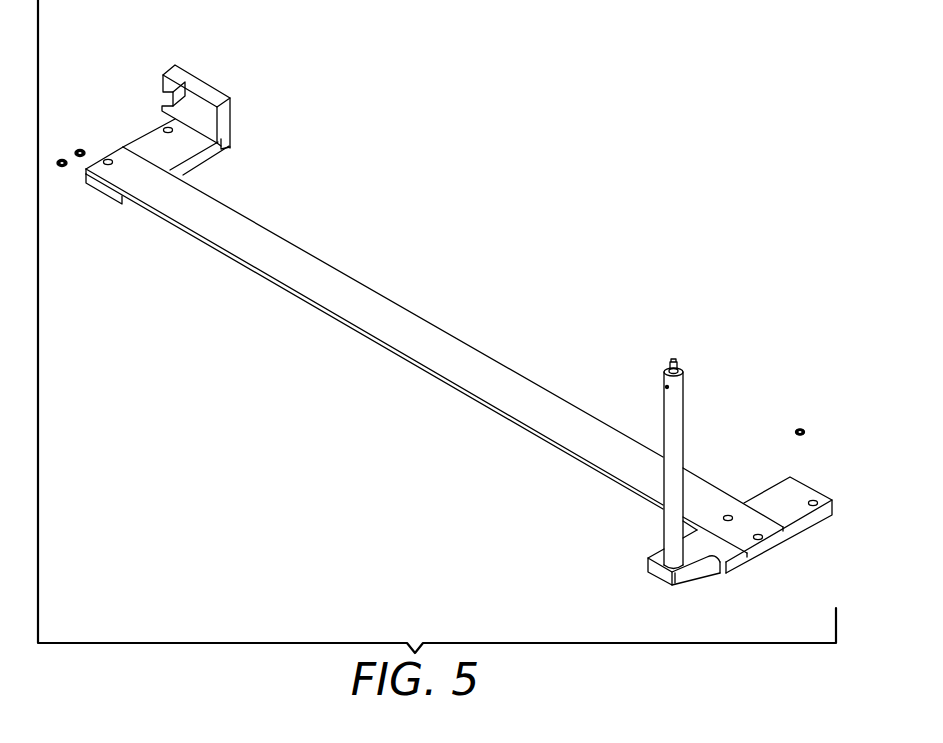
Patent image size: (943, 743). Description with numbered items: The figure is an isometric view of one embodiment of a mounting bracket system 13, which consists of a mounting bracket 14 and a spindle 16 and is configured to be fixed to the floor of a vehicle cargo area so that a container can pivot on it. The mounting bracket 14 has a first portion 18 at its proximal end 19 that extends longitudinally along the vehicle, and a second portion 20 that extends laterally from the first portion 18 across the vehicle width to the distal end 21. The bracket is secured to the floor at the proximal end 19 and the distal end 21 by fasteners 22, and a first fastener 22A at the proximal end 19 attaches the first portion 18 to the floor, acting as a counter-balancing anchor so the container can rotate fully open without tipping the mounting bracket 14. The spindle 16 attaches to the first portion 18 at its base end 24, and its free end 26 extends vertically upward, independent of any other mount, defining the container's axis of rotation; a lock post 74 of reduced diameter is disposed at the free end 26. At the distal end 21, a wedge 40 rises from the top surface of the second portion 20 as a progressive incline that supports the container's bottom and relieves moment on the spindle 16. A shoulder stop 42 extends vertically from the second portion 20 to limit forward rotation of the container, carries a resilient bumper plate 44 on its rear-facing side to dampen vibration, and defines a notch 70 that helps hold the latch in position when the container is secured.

The mounting bracket system 13 is at (545, 147).
The mounting bracket 14 is at (274, 330).
The spindle 16 is at (672, 465).
The first portion 18 is at (786, 489).
The proximal end 19 is at (805, 520).
The second portion 20 is at (417, 340).
The distal end 21 is at (122, 147).
The fasteners 22 is at (60, 159).
The first fastener 22A is at (799, 427).
The base end 24 is at (677, 558).
The free end 26 is at (680, 392).
The wedge 40 is at (186, 148).
The shoulder stop 42 is at (232, 105).
The resilient bumper plate 44 is at (196, 106).
The notch 70 is at (166, 93).
The lock post 74 is at (672, 358).